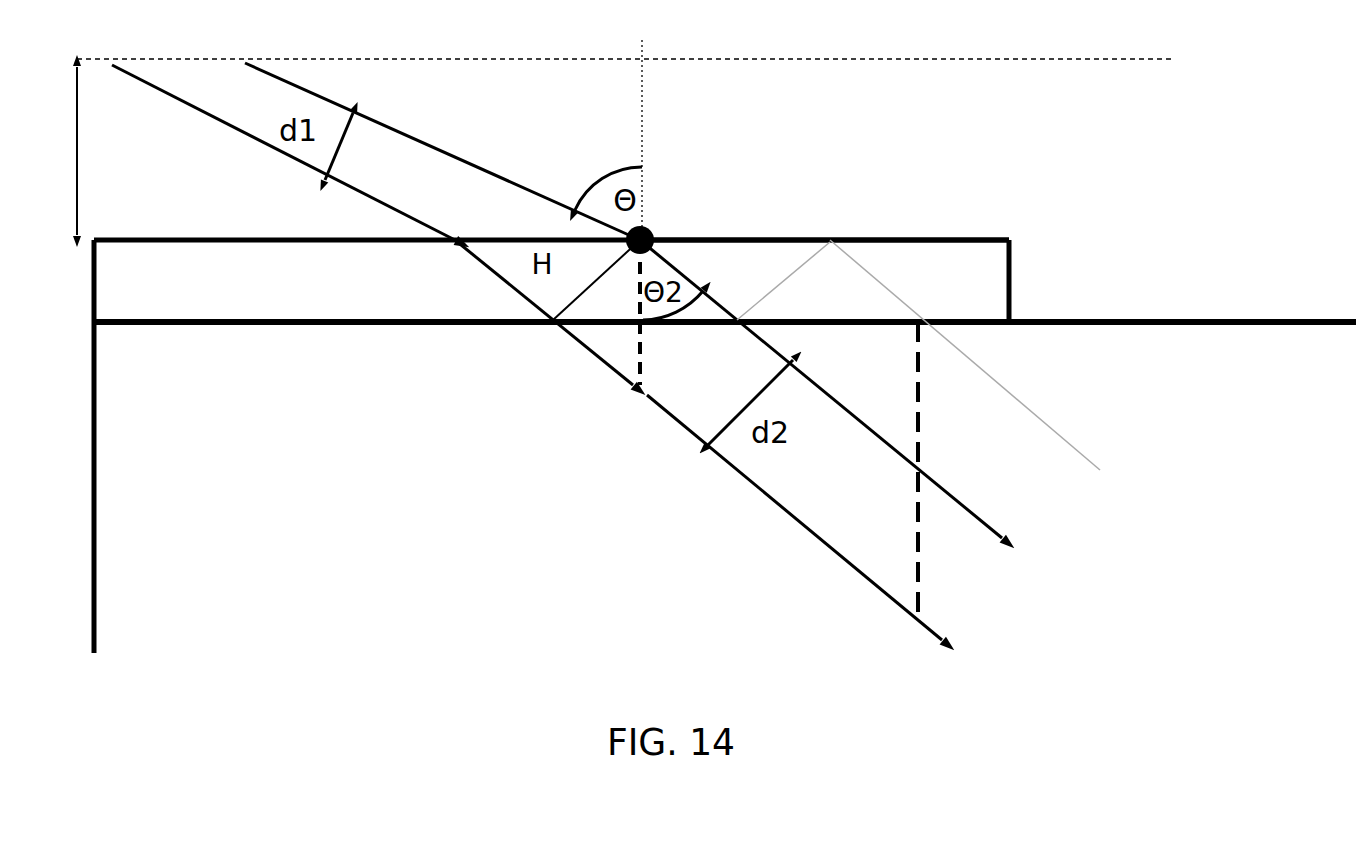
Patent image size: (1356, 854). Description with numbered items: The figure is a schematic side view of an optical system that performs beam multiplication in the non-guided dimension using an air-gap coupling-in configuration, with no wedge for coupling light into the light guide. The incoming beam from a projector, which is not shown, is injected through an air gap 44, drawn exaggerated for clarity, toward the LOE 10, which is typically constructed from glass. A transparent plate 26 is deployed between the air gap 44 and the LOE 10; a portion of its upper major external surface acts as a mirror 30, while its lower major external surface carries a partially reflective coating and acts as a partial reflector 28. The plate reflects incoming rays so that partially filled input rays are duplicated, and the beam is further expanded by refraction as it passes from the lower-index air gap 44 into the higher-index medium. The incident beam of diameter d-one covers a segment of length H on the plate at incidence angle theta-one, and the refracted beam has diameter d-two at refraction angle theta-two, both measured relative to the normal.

The LOE 10 is at (1197, 360).
The transparent plate 26 is at (928, 263).
The partial reflector 28 is at (973, 320).
The mirror 30 is at (983, 237).
The air gap 44 is at (46, 151).